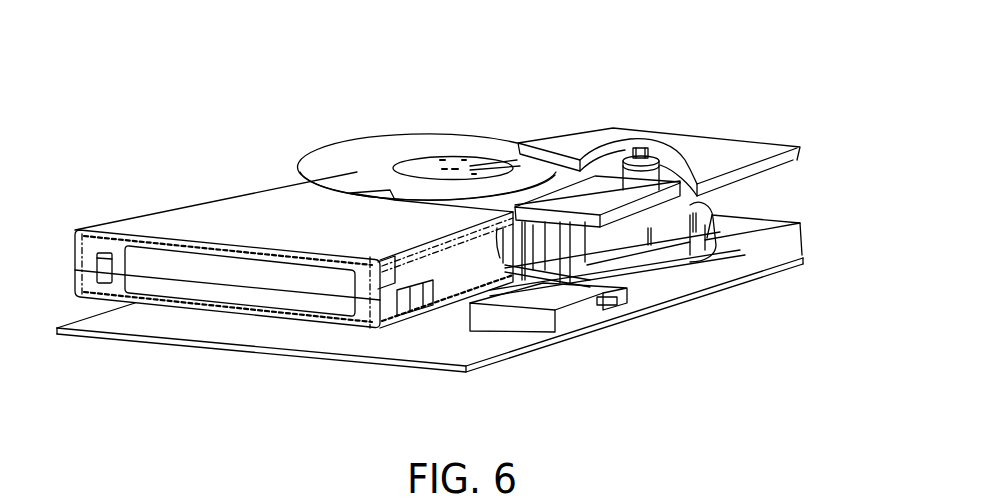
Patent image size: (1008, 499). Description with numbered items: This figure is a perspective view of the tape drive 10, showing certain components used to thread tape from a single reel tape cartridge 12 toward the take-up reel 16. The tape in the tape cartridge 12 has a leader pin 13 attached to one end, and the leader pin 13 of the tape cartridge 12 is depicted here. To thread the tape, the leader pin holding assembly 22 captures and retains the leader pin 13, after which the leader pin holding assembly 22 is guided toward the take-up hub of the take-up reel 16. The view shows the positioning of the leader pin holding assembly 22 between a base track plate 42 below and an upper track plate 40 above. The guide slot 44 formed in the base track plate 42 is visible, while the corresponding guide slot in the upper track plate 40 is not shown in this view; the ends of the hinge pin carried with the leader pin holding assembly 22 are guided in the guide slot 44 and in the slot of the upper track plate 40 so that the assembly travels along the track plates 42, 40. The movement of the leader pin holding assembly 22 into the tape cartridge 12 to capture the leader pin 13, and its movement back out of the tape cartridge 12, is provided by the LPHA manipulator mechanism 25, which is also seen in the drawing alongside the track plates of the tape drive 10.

The tape drive 10 is at (500, 73).
The tape cartridge 12 is at (257, 272).
The leader pin 13 is at (512, 268).
The take-up reel 16 is at (378, 152).
The leader pin holding assembly 22 is at (556, 278).
The LPHA manipulator mechanism 25 is at (752, 265).
The upper track plate 40 is at (733, 148).
The base track plate 42 is at (664, 285).
The guide slot 44 is at (757, 219).